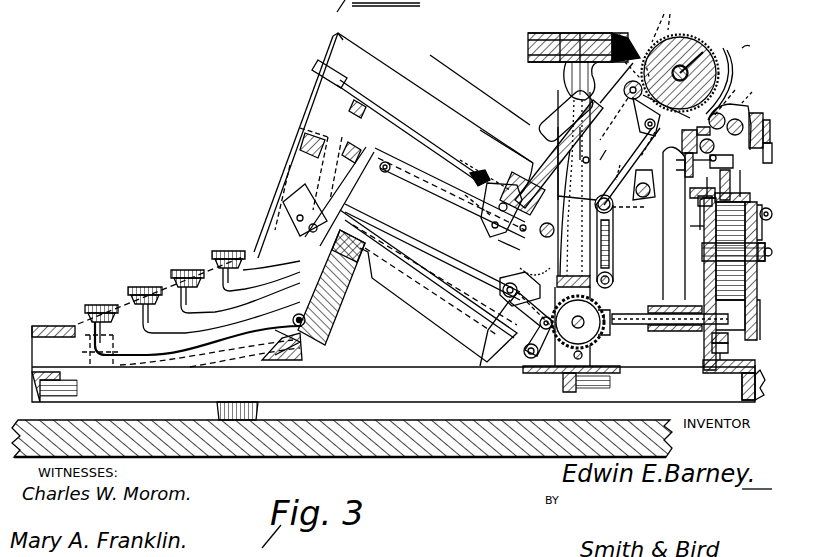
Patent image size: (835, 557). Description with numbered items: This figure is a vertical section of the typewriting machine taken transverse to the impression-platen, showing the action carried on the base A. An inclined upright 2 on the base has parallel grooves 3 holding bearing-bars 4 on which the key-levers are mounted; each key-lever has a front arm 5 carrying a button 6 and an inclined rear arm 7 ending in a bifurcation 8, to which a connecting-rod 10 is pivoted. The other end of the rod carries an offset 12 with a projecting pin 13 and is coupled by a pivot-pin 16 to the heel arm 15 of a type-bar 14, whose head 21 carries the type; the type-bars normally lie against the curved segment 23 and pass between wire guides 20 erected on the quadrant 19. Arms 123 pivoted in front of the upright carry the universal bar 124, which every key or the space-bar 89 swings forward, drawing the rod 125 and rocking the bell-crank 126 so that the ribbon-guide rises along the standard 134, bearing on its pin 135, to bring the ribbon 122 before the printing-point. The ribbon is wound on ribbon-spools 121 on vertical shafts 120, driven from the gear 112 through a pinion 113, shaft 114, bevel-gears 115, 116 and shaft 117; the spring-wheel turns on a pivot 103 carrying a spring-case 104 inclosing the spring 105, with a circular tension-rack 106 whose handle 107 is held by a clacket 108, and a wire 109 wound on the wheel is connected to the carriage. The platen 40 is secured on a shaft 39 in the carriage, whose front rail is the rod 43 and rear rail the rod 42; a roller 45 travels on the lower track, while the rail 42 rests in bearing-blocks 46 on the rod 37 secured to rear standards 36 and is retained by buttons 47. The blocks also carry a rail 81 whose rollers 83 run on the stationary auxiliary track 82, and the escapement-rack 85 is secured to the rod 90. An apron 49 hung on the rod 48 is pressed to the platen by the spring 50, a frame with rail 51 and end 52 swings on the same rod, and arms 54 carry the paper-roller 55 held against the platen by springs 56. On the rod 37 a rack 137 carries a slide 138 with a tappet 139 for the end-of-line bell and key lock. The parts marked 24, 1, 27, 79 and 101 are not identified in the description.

The base A is at (398, 364).
The space-bar 89 is at (53, 323).
The button 6 is at (161, 277).
The front arm 5 is at (192, 314).
The type-bar 14 is at (393, 145).
The type-bar head 21 is at (401, 123).
The curved segment 23 is at (348, 109).
The universal bar 124 is at (361, 144).
The connecting-rod 10 is at (450, 193).
The bifurcation 8 is at (385, 157).
The arms 123 is at (360, 205).
The rod 125 is at (428, 286).
The inclined arm 7 is at (331, 287).
The inclined upright 2 is at (310, 318).
The parallel grooves 3 is at (330, 278).
The bearing-bars 4 is at (318, 316).
The pivot-pin 16 is at (528, 195).
The heel arm 15 is at (493, 219).
The offset 12 is at (522, 236).
The pin 24 is at (545, 236).
The projecting pin 13 is at (509, 252).
The link 1 is at (535, 265).
The bracket 27 is at (528, 302).
The bell-crank 126 is at (516, 329).
The shaft 117 is at (578, 321).
The bevel-gear 116 is at (610, 331).
The shaft 114 is at (666, 312).
The bevel-gear 115 is at (650, 288).
The standard 134 is at (576, 183).
The front rail 43 is at (623, 246).
The rear standards 36 is at (618, 212).
The rail 51 is at (650, 206).
The frame end 52 is at (644, 184).
The guides 20 is at (552, 110).
The quadrant 19 is at (552, 160).
The vertical shafts 120 is at (572, 81).
The ribbon-spools 121 is at (578, 37).
The ribbon 122 is at (633, 45).
The paper-roller 55 is at (662, 21).
The platen 40 is at (680, 69).
The shaft 39 is at (720, 76).
The apron 49 is at (755, 43).
The buttons 47 is at (733, 91).
The rear rail 42 is at (737, 115).
The bearing-blocks 46 is at (735, 108).
The rod 37 is at (739, 136).
The slide 138 is at (770, 126).
The rack 137 is at (766, 130).
The tappet 139 is at (780, 154).
The auxiliary track 82 is at (716, 147).
The rollers 83 is at (734, 160).
The rail 81 is at (682, 151).
The escapement-rack 85 is at (674, 163).
The pin 79 is at (687, 171).
The rod 90 is at (712, 200).
The roller 45 is at (690, 131).
The arms 54 is at (640, 112).
The rod 48 is at (645, 124).
The pin 135 is at (600, 152).
The spring 50 is at (585, 186).
The springs 56 is at (618, 168).
The spring-case 104 is at (727, 187).
The tension-rack 106 is at (748, 284).
The spring 105 is at (760, 230).
The knob 101 is at (780, 215).
The pivot 103 is at (748, 253).
The gear 112 is at (702, 217).
The handle 107 is at (735, 331).
The clacket 108 is at (775, 320).
The pinion 113 is at (710, 348).
The wire 109 is at (730, 386).